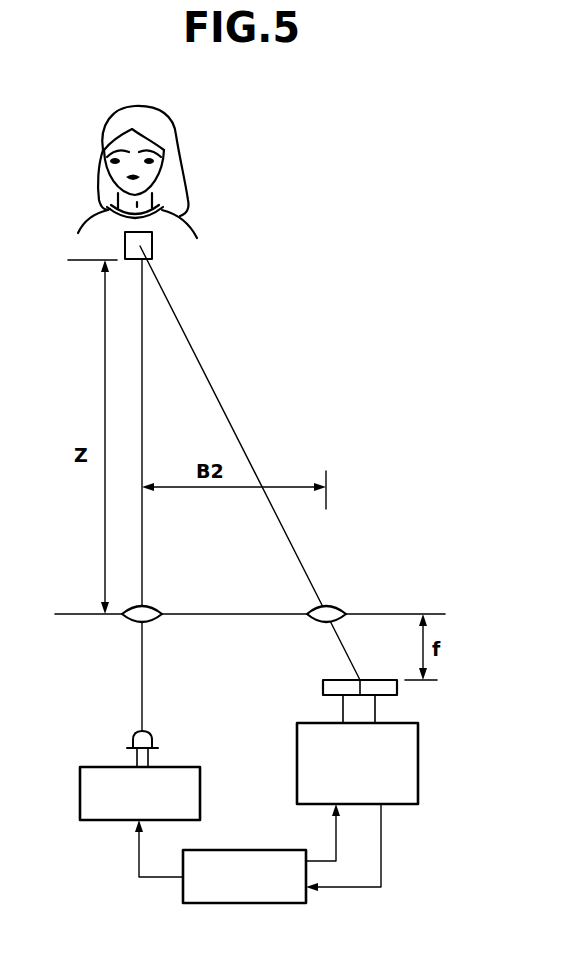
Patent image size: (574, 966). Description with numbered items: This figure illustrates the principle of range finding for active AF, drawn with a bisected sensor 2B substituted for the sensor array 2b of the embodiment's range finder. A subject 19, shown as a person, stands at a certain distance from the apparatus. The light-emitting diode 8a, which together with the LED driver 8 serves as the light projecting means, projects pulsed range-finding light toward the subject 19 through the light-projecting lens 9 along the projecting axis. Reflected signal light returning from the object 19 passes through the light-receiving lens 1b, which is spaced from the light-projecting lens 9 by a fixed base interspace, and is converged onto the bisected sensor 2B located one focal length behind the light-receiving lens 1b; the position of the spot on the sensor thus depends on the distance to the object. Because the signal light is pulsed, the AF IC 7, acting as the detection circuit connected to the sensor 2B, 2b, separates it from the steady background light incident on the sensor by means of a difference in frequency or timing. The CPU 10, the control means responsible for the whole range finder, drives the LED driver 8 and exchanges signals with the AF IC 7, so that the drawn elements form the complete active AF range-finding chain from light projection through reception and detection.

The subject 19 is at (175, 150).
The light-projecting lens 9 is at (130, 623).
The light-receiving lens 1b is at (340, 606).
The bisected sensor 2B is at (412, 701).
The sensor array 2b is at (397, 688).
The light-emitting diode 8a is at (128, 744).
The LED driver 8 is at (200, 784).
The AF IC 7 is at (418, 776).
The CPU 10 is at (183, 898).